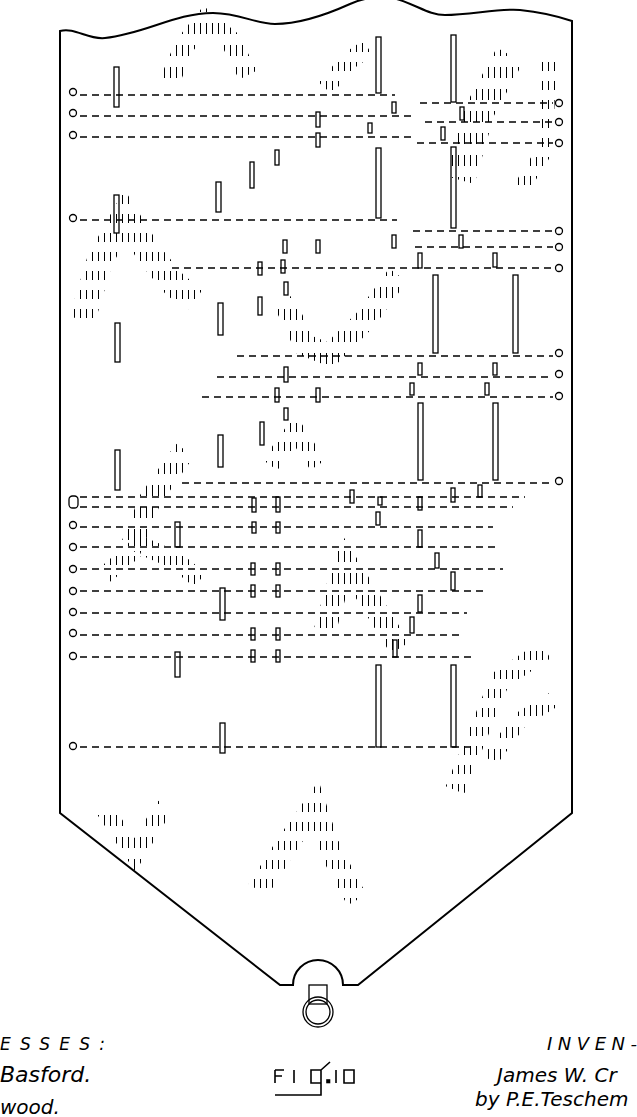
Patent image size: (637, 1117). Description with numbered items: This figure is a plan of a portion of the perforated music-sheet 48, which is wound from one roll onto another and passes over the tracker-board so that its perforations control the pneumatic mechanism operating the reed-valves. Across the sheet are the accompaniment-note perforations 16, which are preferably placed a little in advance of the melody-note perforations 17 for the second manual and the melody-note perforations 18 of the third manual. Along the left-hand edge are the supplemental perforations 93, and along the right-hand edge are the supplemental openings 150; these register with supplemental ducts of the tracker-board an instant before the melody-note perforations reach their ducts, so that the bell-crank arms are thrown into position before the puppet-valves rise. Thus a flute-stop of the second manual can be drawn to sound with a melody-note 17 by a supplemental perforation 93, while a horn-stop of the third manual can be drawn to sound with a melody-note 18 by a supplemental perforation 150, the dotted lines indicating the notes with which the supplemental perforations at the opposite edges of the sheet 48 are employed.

The accompaniment-note perforations 16 is at (120, 80).
The melody-note perforations for the second manual 17 is at (382, 60).
The melody-note perforations of the third manual 18 is at (490, 390).
The supplemental perforations 93 is at (69, 93).
The supplemental openings 150 is at (563, 143).
The perforated music-sheet 48 is at (319, 840).